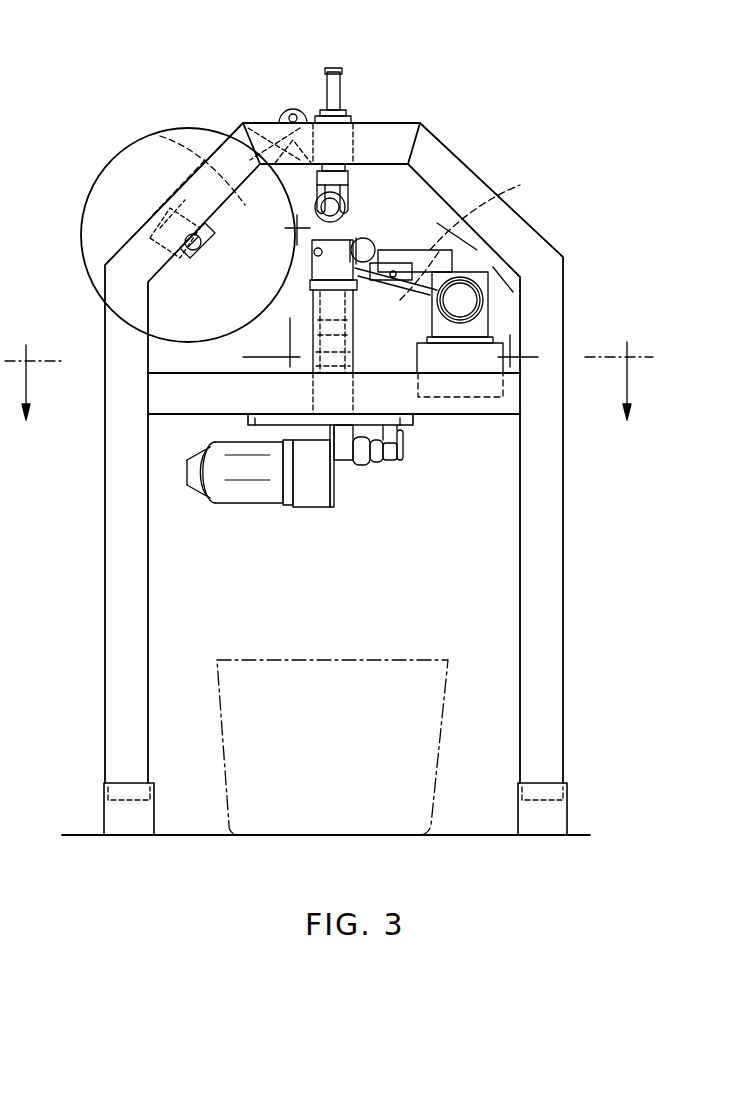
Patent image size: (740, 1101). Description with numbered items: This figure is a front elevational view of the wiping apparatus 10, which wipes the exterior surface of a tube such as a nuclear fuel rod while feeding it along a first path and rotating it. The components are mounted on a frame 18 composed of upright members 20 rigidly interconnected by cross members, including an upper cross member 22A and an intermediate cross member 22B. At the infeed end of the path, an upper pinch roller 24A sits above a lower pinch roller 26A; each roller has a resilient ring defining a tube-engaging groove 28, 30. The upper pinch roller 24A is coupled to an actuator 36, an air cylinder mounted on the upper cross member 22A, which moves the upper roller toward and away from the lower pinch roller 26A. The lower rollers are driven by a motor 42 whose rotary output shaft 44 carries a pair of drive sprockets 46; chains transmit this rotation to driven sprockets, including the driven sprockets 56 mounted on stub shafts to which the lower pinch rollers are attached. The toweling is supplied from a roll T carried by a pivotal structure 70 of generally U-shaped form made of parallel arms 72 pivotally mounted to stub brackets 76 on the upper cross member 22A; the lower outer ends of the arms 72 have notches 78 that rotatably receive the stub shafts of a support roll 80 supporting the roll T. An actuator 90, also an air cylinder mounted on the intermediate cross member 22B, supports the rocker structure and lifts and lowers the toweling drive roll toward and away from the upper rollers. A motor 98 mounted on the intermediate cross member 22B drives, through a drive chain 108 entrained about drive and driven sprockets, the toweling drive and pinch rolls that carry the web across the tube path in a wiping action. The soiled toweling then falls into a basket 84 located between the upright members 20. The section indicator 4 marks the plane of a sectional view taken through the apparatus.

The wiping apparatus 10 is at (498, 63).
The frame 18 is at (565, 545).
The upright members 20 is at (110, 612).
The upper cross member 22A is at (365, 128).
The intermediate cross member 22B is at (432, 420).
The upper pinch roller 24A is at (342, 187).
The lower pinch roller 26A is at (372, 268).
The tube-engaging groove 28 is at (366, 242).
The tube-engaging groove 30 is at (345, 205).
The actuator 36 is at (341, 80).
The motor 42 is at (243, 505).
The rotary output shaft 44 is at (358, 462).
The drive sprockets 46 is at (374, 465).
The driven sprockets 56 is at (410, 255).
The pivotal structure 70 is at (271, 117).
The arms 72 is at (160, 136).
The stub brackets 76 is at (296, 108).
The notches 78 is at (165, 213).
The support roll 80 is at (175, 237).
The basket 84 is at (342, 660).
The actuator 90 is at (318, 380).
The motor 98 is at (485, 305).
The drive chain 108 is at (520, 185).
The section line 4- 4 is at (329, 381).
The roll of toweling T is at (103, 296).